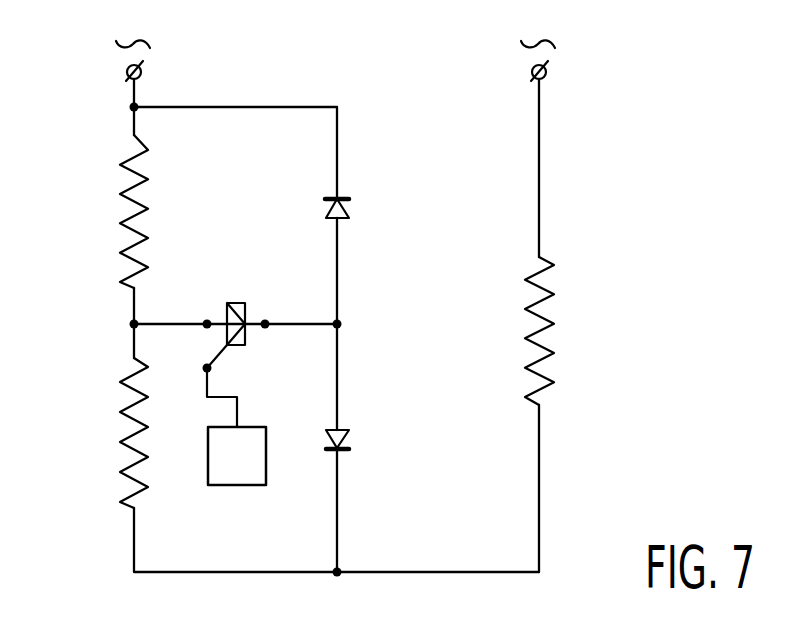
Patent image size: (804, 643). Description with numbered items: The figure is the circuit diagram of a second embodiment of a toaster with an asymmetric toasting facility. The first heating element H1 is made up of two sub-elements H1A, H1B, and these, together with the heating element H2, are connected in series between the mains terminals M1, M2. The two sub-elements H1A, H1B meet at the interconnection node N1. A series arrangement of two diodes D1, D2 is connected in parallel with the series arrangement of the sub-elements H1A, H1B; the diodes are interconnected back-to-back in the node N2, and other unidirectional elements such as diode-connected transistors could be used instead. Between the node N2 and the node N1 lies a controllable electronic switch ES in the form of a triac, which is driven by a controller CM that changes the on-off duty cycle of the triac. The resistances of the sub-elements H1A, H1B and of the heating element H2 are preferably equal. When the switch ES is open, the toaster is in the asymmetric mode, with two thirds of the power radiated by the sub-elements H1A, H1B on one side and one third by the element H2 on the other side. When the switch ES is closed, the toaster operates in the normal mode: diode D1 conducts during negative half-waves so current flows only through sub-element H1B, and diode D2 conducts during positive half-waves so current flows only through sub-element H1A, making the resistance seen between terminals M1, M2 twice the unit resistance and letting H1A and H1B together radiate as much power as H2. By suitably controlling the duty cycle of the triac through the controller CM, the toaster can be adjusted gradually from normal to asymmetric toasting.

The terminal M1 is at (126, 72).
The terminal M2 is at (546, 72).
The heating element H1 is at (89, 321).
The sub-element H1A is at (127, 200).
The sub-element H1B is at (127, 418).
The heating element H2 is at (548, 318).
The interconnection node N1 is at (134, 324).
The node N2 is at (341, 324).
The controllable electronic switch ES is at (228, 303).
The controller CM is at (237, 485).
The diode D1 is at (349, 212).
The diode D2 is at (348, 437).